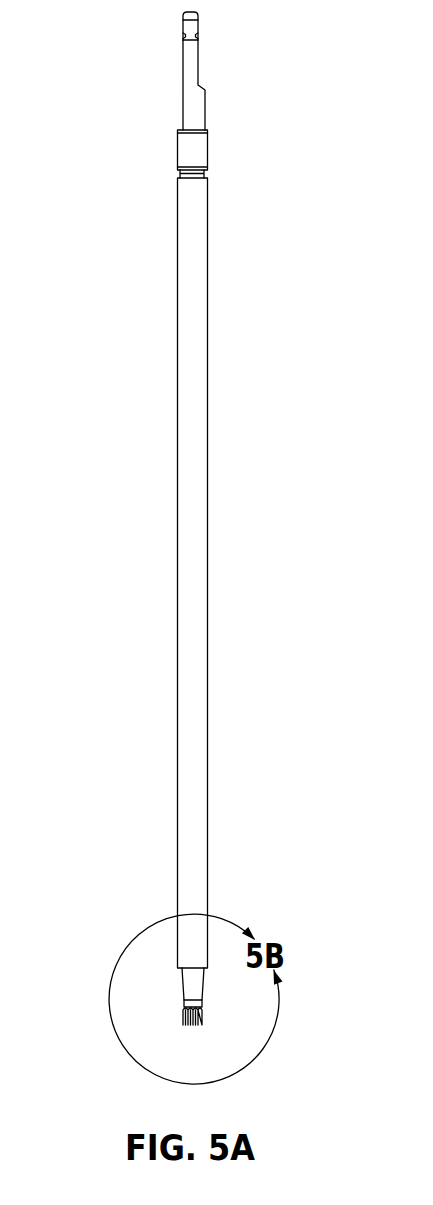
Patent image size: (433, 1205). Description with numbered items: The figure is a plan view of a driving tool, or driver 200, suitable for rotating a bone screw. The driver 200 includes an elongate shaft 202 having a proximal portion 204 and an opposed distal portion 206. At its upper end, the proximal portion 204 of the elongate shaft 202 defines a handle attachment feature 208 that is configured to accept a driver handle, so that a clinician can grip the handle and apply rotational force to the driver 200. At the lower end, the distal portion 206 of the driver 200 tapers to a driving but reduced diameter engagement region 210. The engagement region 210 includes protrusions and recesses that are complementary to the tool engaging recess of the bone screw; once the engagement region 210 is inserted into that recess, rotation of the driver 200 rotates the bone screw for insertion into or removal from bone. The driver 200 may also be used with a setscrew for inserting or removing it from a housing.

The driver 200 is at (207, 549).
The elongate shaft 202 is at (185, 750).
The proximal portion 204 is at (217, 95).
The distal portion 206 is at (190, 982).
The handle attachment feature 208 is at (201, 59).
The engagement region 210 is at (220, 1012).